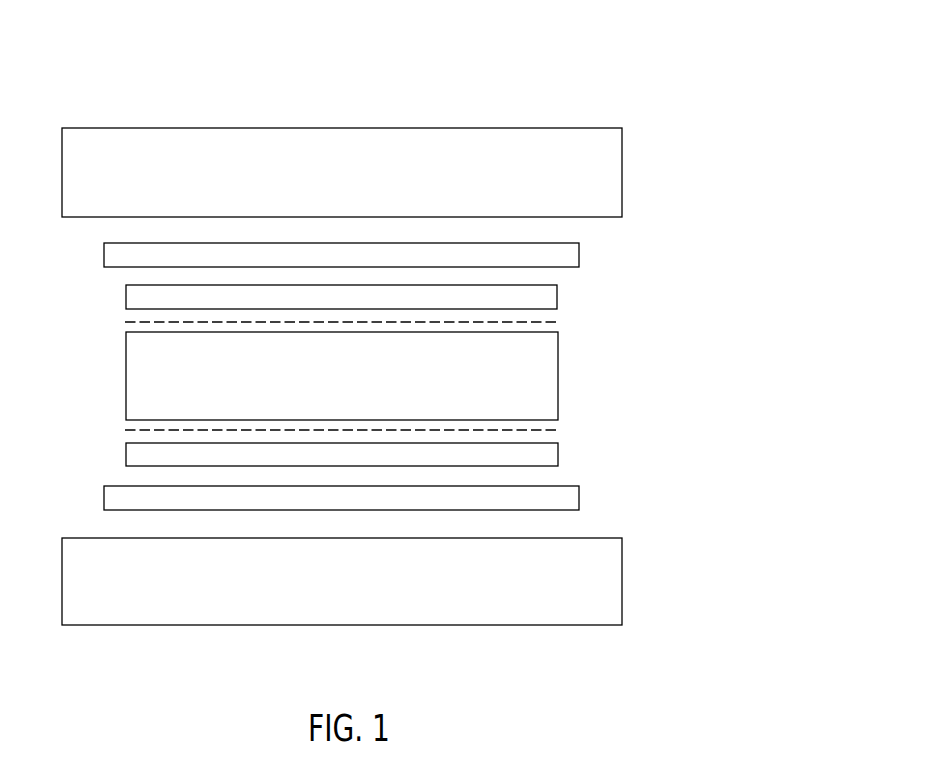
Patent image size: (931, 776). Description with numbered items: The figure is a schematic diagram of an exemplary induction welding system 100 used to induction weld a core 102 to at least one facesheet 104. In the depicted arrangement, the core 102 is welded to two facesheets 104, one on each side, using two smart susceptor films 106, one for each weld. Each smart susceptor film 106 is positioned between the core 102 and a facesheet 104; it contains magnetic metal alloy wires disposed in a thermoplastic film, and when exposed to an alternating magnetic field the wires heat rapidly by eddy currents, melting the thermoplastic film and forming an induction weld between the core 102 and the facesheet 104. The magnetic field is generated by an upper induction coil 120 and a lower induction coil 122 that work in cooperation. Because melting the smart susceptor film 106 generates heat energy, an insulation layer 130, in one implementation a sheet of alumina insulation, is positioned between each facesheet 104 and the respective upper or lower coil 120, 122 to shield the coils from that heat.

The induction welding system 100 is at (702, 68).
The core 102 is at (558, 377).
The facesheet 104 is at (557, 298).
The smart susceptor film 106 is at (125, 322).
The upper induction coil 120 is at (622, 169).
The lower induction coil 122 is at (622, 580).
The insulation layer 130 is at (579, 254).